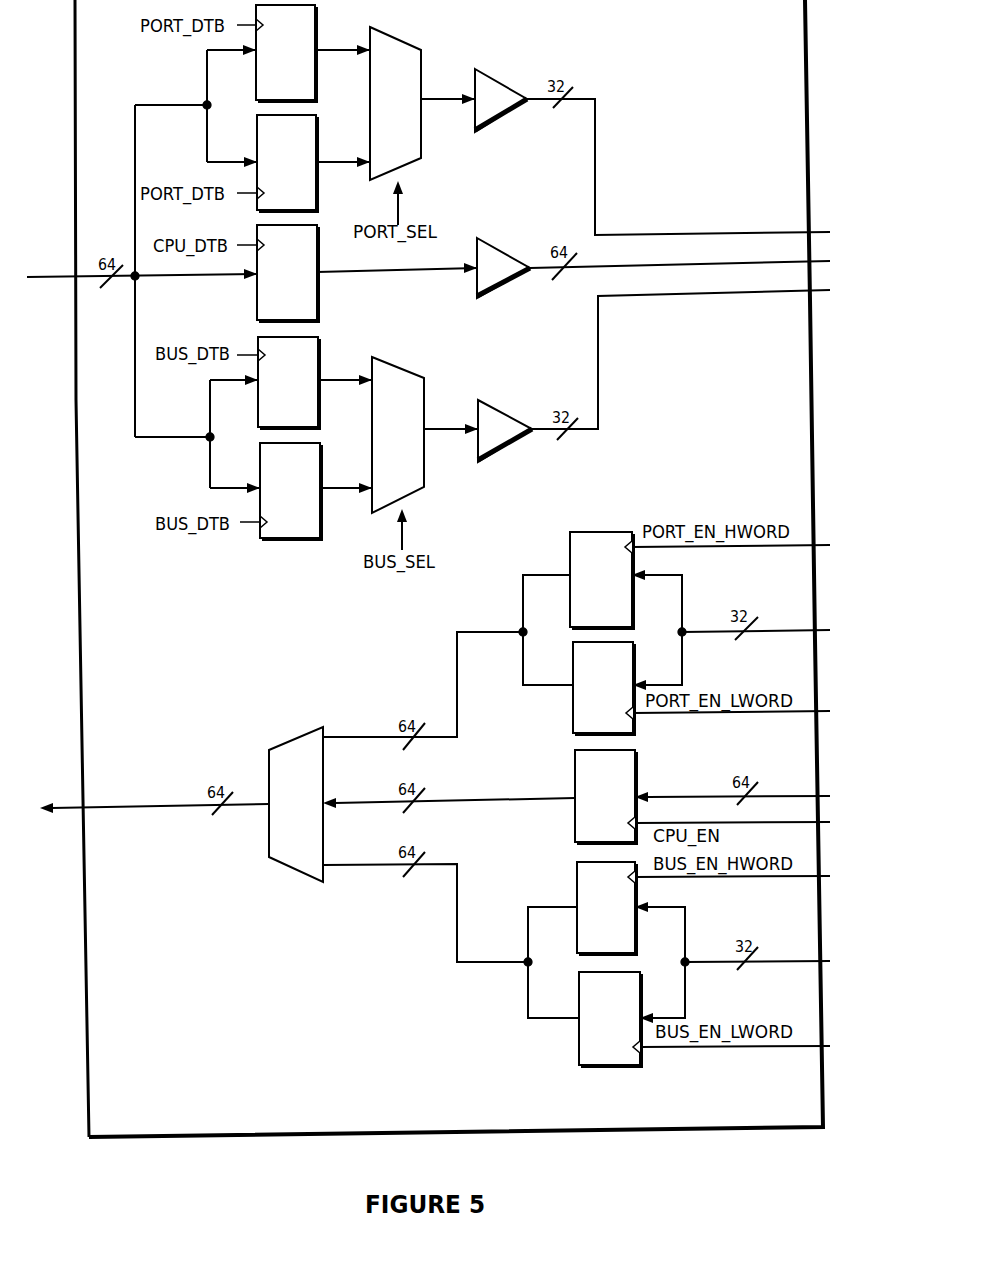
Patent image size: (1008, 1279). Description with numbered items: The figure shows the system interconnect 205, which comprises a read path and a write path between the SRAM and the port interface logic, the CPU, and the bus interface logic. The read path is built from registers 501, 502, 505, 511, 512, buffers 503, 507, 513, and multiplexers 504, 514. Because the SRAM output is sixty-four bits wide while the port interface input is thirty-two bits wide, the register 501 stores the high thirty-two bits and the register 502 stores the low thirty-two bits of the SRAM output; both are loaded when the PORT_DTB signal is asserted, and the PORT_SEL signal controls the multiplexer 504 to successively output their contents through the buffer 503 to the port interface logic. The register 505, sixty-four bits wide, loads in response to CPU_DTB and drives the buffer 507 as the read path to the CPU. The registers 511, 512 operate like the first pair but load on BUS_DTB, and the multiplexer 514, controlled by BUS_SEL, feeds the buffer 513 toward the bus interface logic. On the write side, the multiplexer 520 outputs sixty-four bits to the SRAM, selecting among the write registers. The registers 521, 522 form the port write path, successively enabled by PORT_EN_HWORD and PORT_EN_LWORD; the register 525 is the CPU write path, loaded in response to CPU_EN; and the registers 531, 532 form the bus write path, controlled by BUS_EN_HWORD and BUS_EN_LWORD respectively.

The system interconnect 205 is at (806, 1120).
The register 501 is at (311, 91).
The register 502 is at (312, 201).
The buffer 503 is at (505, 108).
The multiplexer 504 is at (415, 151).
The register 505 is at (313, 313).
The buffer 507 is at (507, 278).
The register 511 is at (314, 420).
The register 512 is at (316, 531).
The buffer 513 is at (508, 436).
The multiplexer 514 is at (418, 483).
The multiplexer 520 is at (318, 851).
The register 521 is at (602, 620).
The register 522 is at (605, 728).
The register 525 is at (607, 838).
The register 531 is at (610, 950).
The register 532 is at (612, 1060).